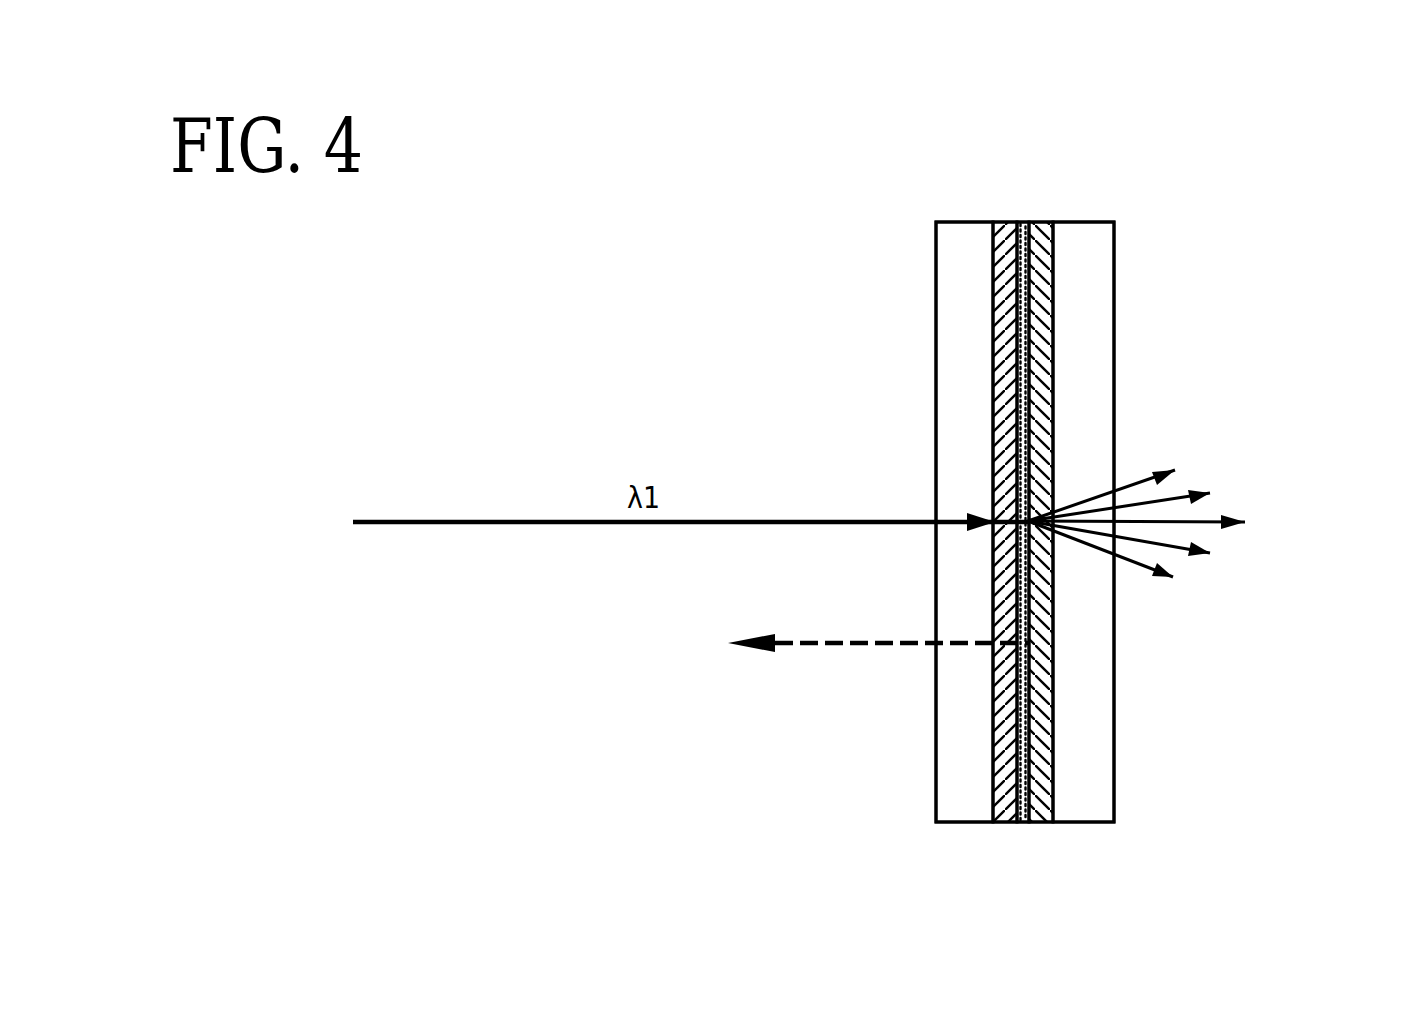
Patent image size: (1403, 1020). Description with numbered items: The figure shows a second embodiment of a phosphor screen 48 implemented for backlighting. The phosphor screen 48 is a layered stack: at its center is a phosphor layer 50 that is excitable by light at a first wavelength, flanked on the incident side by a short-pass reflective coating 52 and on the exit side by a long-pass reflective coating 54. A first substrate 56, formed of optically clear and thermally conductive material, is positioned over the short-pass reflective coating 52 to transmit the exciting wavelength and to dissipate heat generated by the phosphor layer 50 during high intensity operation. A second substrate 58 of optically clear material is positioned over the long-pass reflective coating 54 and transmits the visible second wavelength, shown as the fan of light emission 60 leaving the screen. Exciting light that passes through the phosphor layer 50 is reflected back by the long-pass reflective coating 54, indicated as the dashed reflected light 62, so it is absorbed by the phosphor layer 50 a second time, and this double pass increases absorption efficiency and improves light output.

The phosphor screen 48 is at (820, 218).
The phosphor layer 50 is at (1025, 222).
The short-pass reflective coating 52 is at (1003, 222).
The long-pass reflective coating 54 is at (1040, 222).
The first substrate 56 is at (951, 222).
The second substrate 58 is at (1098, 222).
The light emission 60 is at (1168, 547).
The reflected light 62 is at (810, 646).